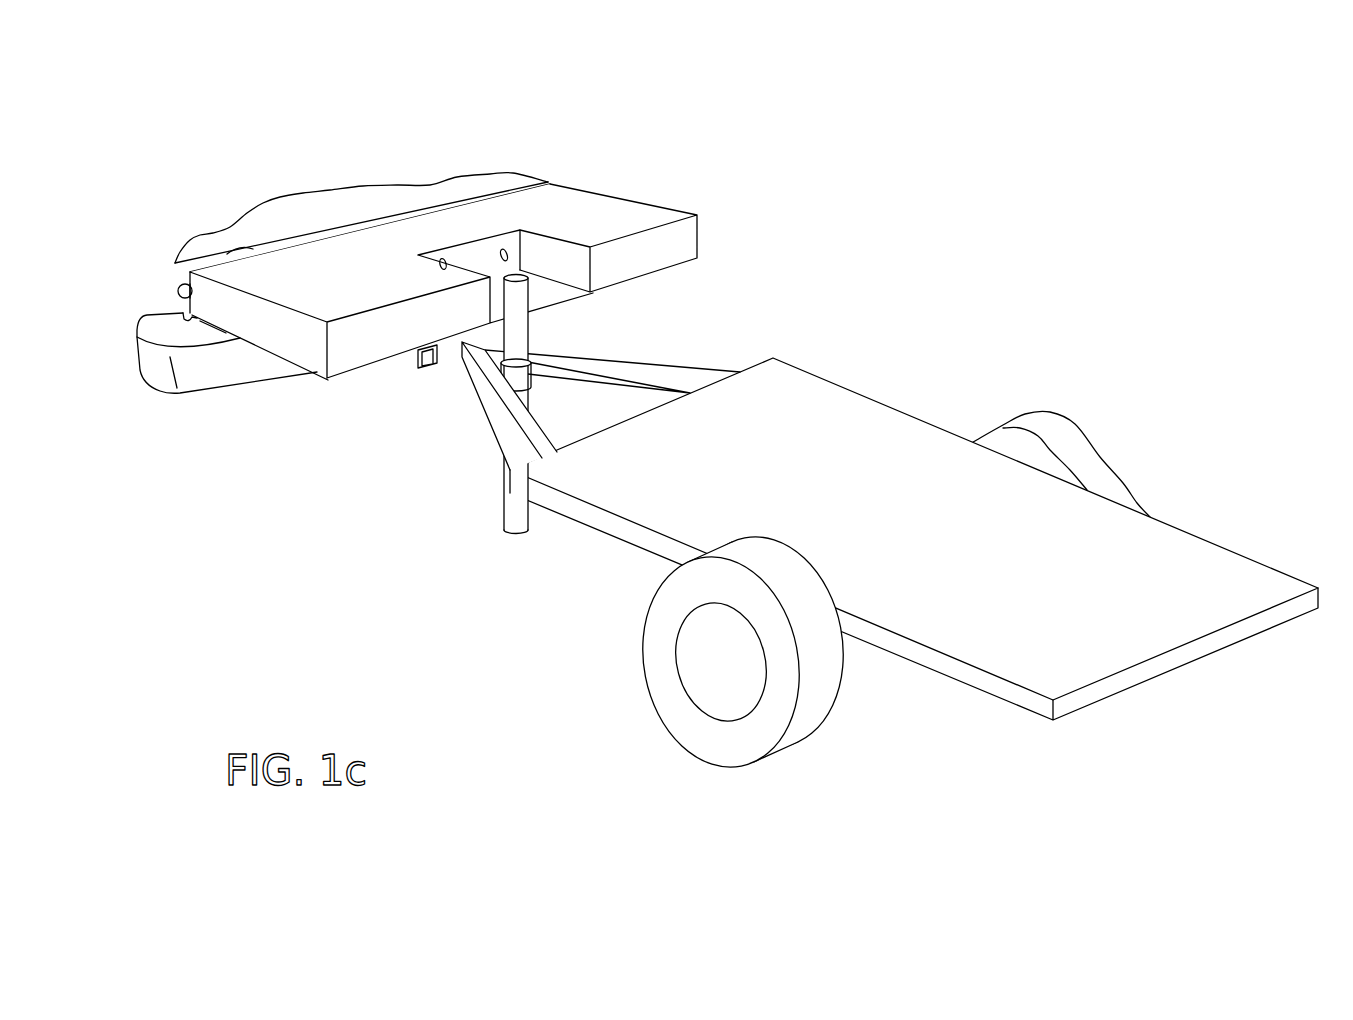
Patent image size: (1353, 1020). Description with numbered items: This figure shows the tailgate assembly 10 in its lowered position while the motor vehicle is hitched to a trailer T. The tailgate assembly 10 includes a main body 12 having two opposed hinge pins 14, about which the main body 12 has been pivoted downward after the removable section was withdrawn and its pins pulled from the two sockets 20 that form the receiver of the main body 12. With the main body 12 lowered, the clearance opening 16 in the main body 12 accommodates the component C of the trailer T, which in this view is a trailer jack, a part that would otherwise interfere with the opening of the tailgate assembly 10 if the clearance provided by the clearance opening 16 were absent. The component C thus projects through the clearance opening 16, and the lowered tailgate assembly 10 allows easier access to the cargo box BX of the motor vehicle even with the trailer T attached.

The tailgate assembly 10 is at (473, 233).
The main body 12 is at (637, 217).
The hinge pins 14 is at (178, 292).
The clearance opening 16 is at (543, 260).
The sockets 20 is at (503, 249).
The cargo box BX is at (310, 210).
The component C is at (529, 322).
The trailer T is at (873, 460).